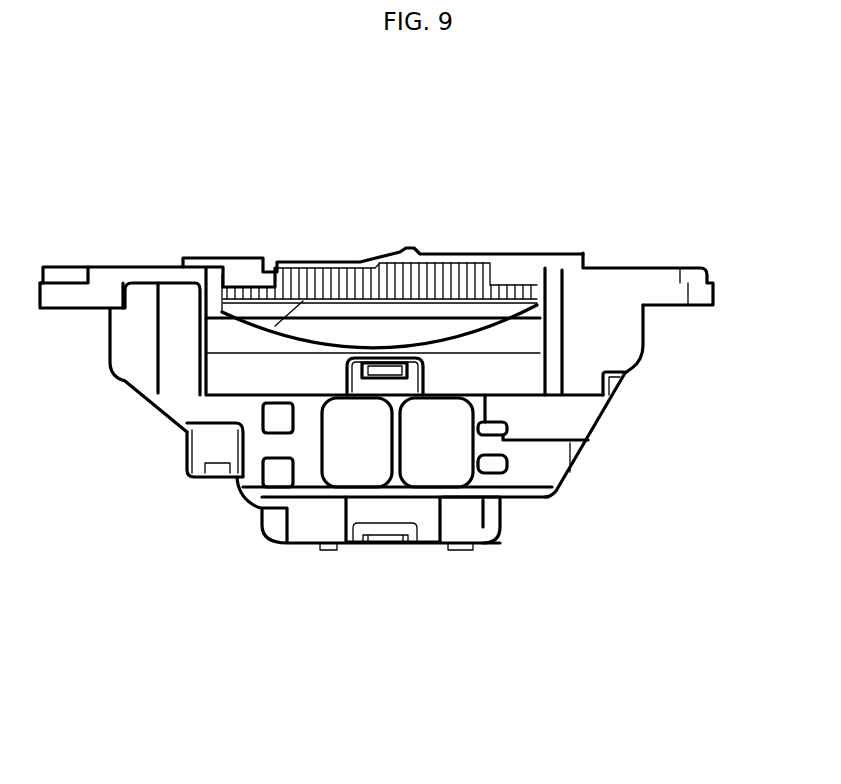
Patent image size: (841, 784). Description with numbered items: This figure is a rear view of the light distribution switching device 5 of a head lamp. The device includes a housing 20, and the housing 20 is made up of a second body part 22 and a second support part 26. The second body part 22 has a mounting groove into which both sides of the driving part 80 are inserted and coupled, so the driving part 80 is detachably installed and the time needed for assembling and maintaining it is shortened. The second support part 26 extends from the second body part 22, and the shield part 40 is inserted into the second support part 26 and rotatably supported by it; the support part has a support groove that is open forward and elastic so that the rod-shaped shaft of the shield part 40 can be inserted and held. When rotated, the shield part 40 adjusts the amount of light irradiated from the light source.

The light distribution switching device 5 is at (462, 156).
The housing 20 is at (688, 365).
The second body part 22 is at (590, 460).
The second support part 26 is at (650, 333).
The shield part 40 is at (343, 241).
The driving part 80 is at (429, 525).